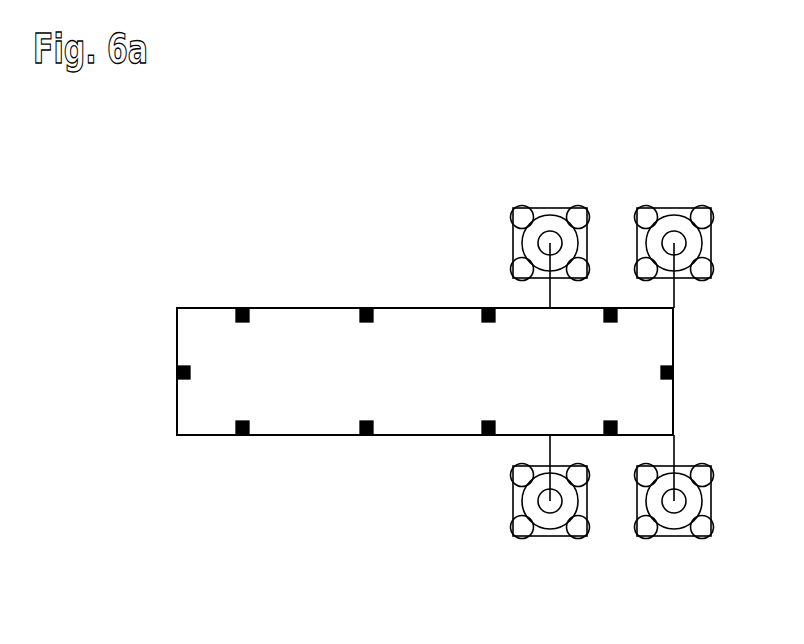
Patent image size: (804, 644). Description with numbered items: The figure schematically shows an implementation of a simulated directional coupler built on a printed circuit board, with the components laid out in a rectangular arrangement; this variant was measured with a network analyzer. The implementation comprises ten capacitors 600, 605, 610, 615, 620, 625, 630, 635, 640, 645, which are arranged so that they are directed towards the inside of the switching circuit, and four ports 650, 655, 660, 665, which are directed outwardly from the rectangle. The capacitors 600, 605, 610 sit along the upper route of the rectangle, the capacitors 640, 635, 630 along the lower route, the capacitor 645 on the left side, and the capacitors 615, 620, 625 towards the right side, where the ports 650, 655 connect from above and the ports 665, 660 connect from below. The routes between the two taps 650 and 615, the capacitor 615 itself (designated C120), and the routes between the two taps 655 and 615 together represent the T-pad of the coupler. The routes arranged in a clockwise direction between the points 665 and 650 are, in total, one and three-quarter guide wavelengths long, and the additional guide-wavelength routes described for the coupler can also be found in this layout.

The capacitor 600 is at (247, 308).
The capacitor 605 is at (368, 308).
The capacitor 610 is at (489, 308).
The capacitor 615 is at (609, 322).
The capacitor 620 is at (675, 371).
The capacitor 625 is at (609, 421).
The capacitor 630 is at (487, 436).
The capacitor 635 is at (366, 436).
The capacitor 640 is at (243, 436).
The capacitor 645 is at (177, 372).
The port 650 is at (541, 209).
The port 655 is at (665, 209).
The port 660 is at (677, 536).
The port 665 is at (553, 536).